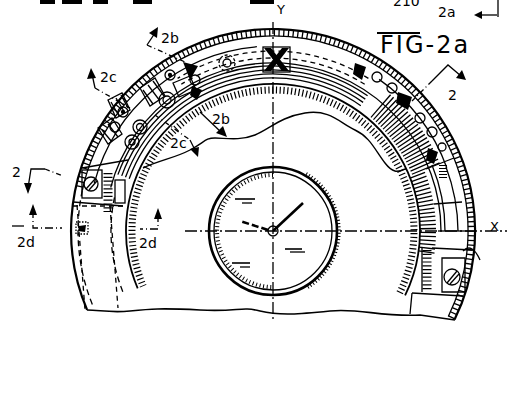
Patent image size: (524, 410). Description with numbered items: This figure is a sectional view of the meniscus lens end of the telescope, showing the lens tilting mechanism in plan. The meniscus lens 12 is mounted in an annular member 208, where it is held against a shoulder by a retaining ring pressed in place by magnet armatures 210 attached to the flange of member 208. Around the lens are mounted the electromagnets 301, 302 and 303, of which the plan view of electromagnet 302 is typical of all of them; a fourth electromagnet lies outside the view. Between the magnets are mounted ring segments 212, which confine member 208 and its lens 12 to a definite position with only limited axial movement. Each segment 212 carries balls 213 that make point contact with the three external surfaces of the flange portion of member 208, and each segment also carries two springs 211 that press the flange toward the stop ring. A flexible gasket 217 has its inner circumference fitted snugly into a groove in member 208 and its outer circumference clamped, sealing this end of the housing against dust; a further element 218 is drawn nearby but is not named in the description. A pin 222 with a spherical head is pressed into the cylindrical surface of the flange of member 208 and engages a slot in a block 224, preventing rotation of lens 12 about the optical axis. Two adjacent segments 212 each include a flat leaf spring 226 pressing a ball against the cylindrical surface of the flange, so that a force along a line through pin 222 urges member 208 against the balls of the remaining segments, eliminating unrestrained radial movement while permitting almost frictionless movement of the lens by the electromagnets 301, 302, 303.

The meniscus lens 12 is at (380, 217).
The annular member 208 is at (417, 274).
The magnet armatures 210 is at (130, 162).
The springs 211 is at (190, 94).
The ring segments 212 is at (155, 75).
The balls 213 is at (137, 88).
The gasket 217 is at (486, 260).
The fastening screw 218 is at (466, 276).
The pin 222 is at (78, 252).
The block 224 is at (78, 266).
The flat leaf spring 226 is at (403, 100).
The electromagnet 301 is at (106, 140).
The electromagnet 302 is at (255, 48).
The electromagnet 303 is at (468, 160).